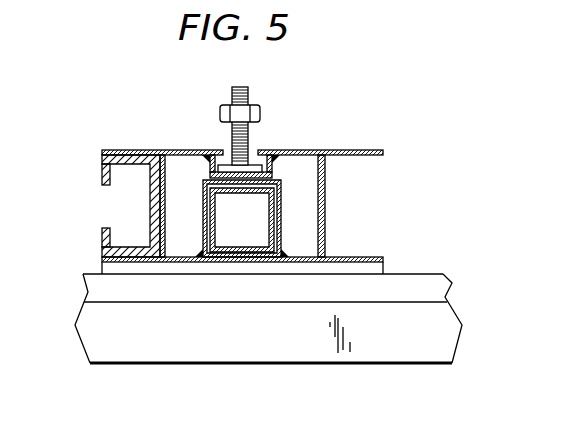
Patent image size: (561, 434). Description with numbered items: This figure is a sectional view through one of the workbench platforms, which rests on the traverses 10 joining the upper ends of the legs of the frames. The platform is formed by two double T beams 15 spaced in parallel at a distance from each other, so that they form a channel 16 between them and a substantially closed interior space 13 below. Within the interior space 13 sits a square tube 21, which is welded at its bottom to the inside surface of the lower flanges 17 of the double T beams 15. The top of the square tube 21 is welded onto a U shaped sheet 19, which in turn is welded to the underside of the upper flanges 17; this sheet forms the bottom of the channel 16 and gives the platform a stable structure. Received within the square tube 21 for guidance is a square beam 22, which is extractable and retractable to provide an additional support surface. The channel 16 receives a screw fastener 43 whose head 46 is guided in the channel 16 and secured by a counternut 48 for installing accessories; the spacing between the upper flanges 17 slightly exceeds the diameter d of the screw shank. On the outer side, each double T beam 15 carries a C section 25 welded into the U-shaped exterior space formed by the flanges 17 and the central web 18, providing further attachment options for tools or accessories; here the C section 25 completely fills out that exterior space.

The traverse 10 is at (378, 355).
The interior space 13 is at (297, 241).
The double T beam 15 is at (300, 285).
The channel 16 is at (262, 138).
The flange 17 is at (140, 140).
The central web 18 is at (325, 188).
The U shaped sheet 19 is at (209, 160).
The square tube 21 is at (282, 229).
The square beam 22 is at (242, 247).
The C section 25 is at (101, 172).
The screw fastener 43 is at (242, 112).
The head 46 is at (208, 175).
The counternut 48 is at (262, 112).
The diameter of the screw shank d is at (230, 135).